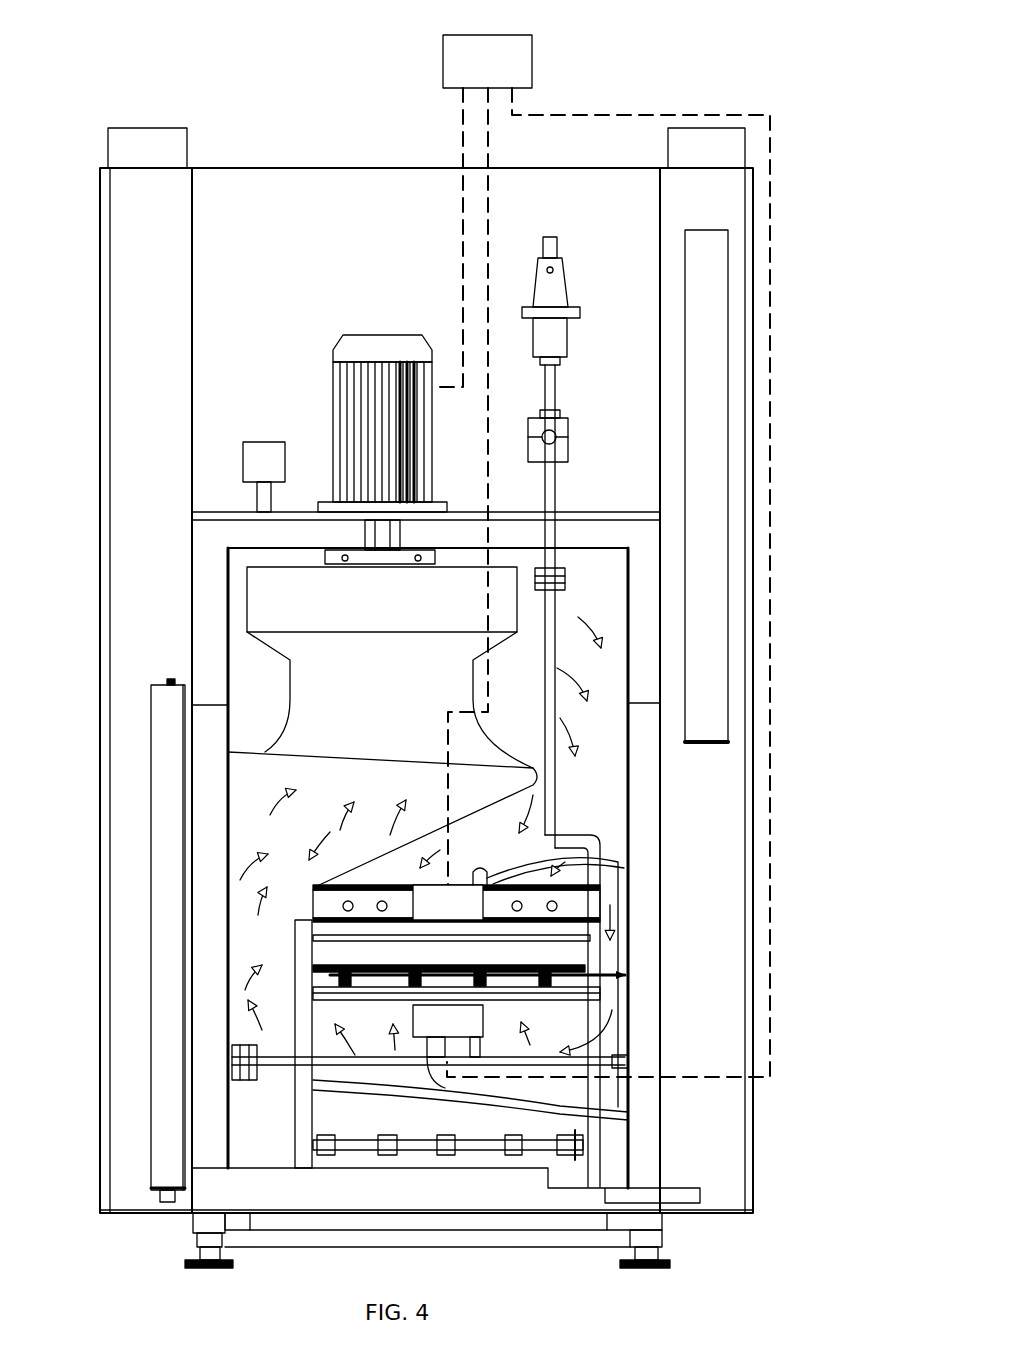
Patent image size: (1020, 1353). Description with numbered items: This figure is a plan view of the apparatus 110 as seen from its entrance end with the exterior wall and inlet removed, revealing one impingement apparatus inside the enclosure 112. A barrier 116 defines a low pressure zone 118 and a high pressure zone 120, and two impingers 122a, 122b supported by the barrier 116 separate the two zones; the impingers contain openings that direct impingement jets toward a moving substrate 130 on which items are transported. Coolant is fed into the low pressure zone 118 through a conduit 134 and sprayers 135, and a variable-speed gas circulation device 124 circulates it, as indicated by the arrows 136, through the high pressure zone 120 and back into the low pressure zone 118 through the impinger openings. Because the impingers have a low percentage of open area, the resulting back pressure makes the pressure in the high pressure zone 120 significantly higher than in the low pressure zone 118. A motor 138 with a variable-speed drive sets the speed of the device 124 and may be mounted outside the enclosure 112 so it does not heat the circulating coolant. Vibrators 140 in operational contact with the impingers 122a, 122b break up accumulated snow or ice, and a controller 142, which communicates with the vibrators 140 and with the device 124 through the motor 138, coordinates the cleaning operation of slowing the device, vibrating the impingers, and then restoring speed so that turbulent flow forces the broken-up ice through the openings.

The apparatus 110 is at (630, 75).
The enclosure 112 is at (608, 488).
The barrier 116 is at (320, 752).
The low pressure zone 118 is at (282, 792).
The high pressure zone 120 is at (612, 821).
The impinger 122a is at (567, 888).
The impinger 122b is at (481, 1035).
The variable-speed gas circulation device 124 is at (405, 620).
The moving substrate 130 is at (560, 965).
The conduit 134 is at (553, 617).
The sprayers 135 is at (348, 920).
The arrows 136 is at (332, 835).
The motor 138 is at (333, 385).
The vibrators 140 is at (470, 918).
The controller 142 is at (510, 75).